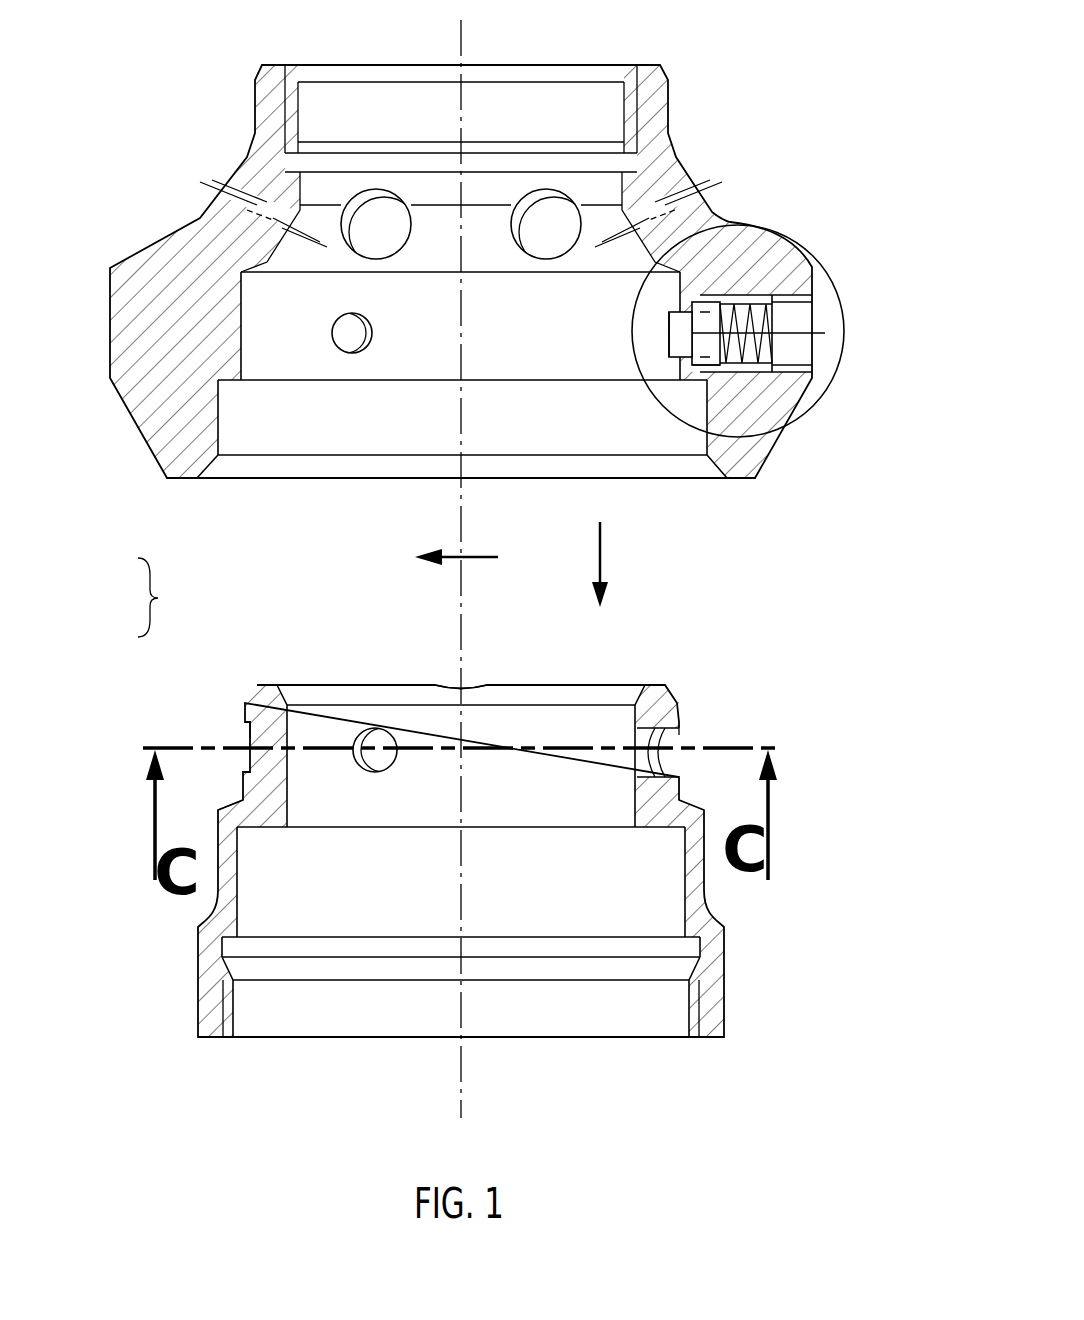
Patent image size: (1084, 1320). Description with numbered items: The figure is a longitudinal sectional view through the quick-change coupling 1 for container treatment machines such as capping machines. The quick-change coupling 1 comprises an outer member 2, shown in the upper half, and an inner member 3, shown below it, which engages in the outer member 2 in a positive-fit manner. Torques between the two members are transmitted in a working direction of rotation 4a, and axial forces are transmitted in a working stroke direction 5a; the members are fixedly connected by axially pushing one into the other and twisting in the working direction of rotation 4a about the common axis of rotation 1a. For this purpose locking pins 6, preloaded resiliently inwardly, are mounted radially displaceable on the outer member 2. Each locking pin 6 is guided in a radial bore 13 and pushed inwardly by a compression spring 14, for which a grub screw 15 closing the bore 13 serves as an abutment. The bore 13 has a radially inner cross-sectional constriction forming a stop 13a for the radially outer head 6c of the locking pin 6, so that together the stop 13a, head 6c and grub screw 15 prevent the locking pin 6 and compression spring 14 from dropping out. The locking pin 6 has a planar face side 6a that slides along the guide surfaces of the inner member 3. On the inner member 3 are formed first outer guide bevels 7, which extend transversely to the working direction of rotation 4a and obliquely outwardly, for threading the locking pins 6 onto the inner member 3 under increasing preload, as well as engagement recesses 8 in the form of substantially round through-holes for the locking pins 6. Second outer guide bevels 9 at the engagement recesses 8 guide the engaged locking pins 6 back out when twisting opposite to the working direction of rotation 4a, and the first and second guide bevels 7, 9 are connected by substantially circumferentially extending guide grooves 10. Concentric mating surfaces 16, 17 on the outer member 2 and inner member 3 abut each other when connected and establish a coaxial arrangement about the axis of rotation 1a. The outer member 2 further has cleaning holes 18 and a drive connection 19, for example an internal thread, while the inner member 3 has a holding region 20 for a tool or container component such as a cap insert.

The quick-change coupling 1 is at (157, 597).
The axis of rotation 1a is at (463, 38).
The outer member 2 is at (151, 512).
The inner member 3 is at (149, 681).
The working direction of rotation 4a is at (483, 557).
The working stroke direction 5a is at (600, 540).
The locking pin 6 is at (762, 298).
The face side 6a is at (661, 346).
The head 6c is at (705, 365).
The first outer guide bevel 7 is at (456, 686).
The engagement recess 8 is at (376, 726).
The second outer guide bevel 9 is at (659, 765).
The guide groove 10 is at (668, 323).
The bore 13 is at (814, 252).
The stop 13a is at (698, 289).
The compression spring 14 is at (745, 355).
The grub screw 15 is at (797, 352).
The mating surface 16 is at (259, 368).
The mating surface 17 is at (240, 783).
The cleaning hole 18 is at (587, 228).
The drive connection 19 is at (312, 121).
The holding region 20 is at (582, 994).